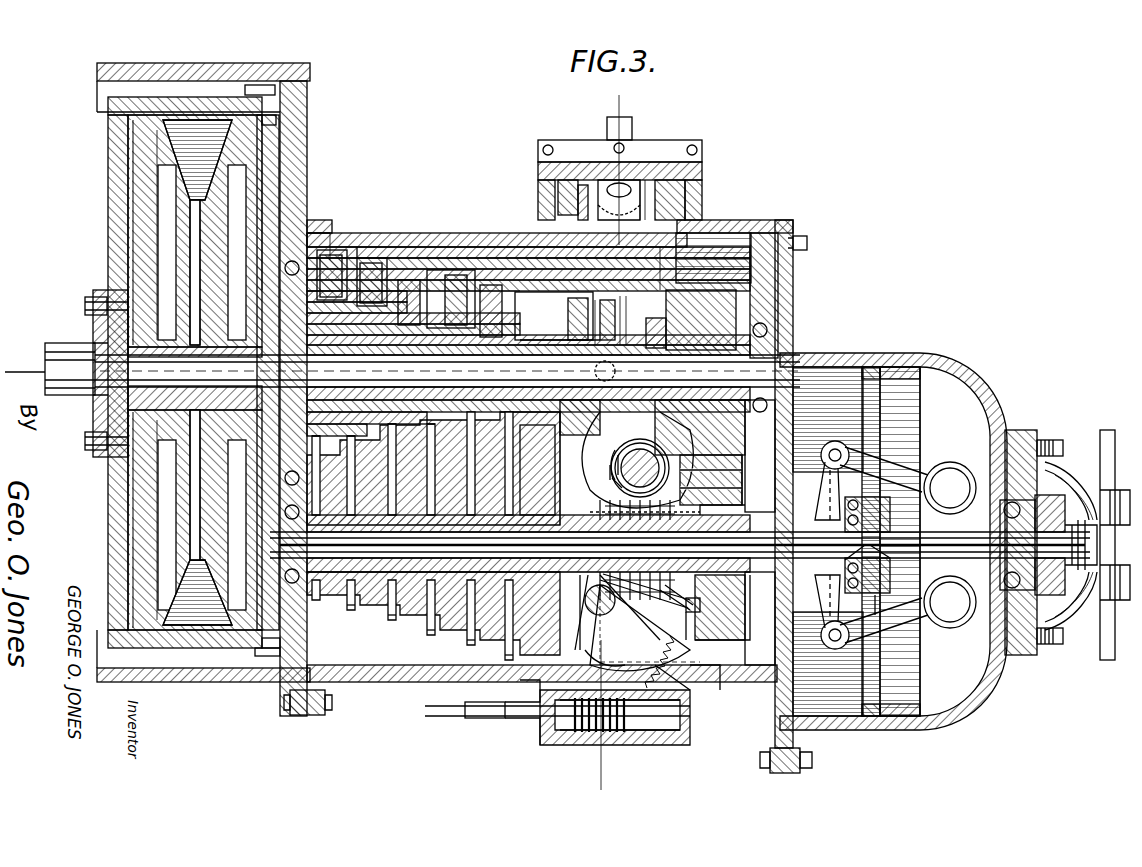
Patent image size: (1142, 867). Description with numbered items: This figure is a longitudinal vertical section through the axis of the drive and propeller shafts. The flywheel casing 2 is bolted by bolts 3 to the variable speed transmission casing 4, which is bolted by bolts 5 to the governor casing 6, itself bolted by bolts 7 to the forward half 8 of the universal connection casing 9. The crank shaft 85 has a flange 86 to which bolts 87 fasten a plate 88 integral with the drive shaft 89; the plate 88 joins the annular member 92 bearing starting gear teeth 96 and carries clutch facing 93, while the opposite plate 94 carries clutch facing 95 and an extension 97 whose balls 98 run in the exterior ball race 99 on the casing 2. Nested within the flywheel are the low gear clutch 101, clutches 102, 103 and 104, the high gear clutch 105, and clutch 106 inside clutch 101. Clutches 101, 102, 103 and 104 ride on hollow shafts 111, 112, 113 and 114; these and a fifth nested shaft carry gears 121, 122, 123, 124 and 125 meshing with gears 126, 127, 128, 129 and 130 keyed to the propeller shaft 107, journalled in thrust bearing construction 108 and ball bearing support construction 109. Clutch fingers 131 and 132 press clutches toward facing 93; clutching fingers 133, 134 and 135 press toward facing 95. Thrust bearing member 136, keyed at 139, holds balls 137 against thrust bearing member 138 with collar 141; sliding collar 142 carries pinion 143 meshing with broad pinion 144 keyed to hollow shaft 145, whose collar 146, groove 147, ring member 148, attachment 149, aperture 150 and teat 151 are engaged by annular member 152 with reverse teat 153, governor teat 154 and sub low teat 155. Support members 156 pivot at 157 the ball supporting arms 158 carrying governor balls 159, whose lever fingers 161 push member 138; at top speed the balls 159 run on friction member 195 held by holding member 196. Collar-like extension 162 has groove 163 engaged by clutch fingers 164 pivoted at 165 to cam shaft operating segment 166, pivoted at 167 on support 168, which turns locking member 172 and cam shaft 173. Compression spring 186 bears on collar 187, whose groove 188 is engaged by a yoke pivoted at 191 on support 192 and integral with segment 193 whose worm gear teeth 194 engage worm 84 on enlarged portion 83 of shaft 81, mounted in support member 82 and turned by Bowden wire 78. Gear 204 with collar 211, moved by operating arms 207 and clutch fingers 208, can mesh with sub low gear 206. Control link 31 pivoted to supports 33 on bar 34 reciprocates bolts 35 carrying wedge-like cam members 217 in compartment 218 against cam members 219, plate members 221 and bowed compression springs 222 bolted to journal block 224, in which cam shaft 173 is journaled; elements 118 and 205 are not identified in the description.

The flywheel casing 2 is at (176, 63).
The bolts 3 is at (340, 210).
The variable speed transmission casing 4 is at (240, 40).
The bolts 5 is at (304, 25).
The governor casing 6 is at (611, 107).
The bolts 7 is at (1045, 450).
The forward half of universal connection casing 8 is at (1080, 628).
The universal connection casing 9 is at (26, 367).
The control link 31 is at (612, 145).
The upstanding supports 33 is at (632, 120).
The bar 34 is at (572, 140).
The bolts 35 is at (652, 460).
The Bowden wire 78 is at (436, 712).
The shaft 81 is at (485, 717).
The support member 82 is at (670, 745).
The enlarged portion 83 is at (655, 735).
The worm 84 is at (628, 735).
The crank shaft 85 is at (58, 343).
The flange 86 is at (93, 400).
The bolts 87 is at (85, 300).
The plate 88 is at (108, 486).
The drive shaft 89 is at (447, 370).
The circumferential annular member 92 is at (190, 682).
The clutch facing 93 is at (108, 151).
The plate 94 is at (307, 134).
The clutch facing 95 is at (307, 160).
The starting gear teeth 96 is at (255, 656).
The extension 97 is at (355, 250).
The balls 98 is at (335, 240).
The exterior ball race 99 is at (345, 235).
The low gear clutch 101 is at (133, 181).
The clutch 102 is at (140, 135).
The clutch 103 is at (240, 125).
The clutch 104 is at (307, 172).
The high gear clutch 105 is at (225, 540).
The clutch 106 is at (133, 500).
The propeller shaft 107 is at (755, 525).
The thrust bearing construction 108 is at (1055, 480).
The ball bearing support construction 109 is at (300, 600).
The hollow shaft 111 is at (557, 330).
The hollow shaft 112 is at (421, 302).
The hollow shaft 113 is at (407, 445).
The hollow shaft 114 is at (337, 454).
The ring 118 is at (352, 275).
The gear 121 is at (511, 311).
The gear 122 is at (451, 299).
The gear 123 is at (445, 300).
The gear 124 is at (420, 250).
The gear 125 is at (395, 245).
The gear 126 is at (475, 646).
The gear 127 is at (445, 644).
The gear 128 is at (405, 630).
The gear 129 is at (382, 626).
The gear 130 is at (354, 621).
The clutch finger 131 is at (665, 276).
The clutch finger 132 is at (713, 258).
The clutching finger 133 is at (512, 260).
The clutching finger 134 is at (482, 250).
The clutching finger 135 is at (450, 240).
The thrust bearing member 136 is at (868, 585).
The balls 137 is at (882, 615).
The thrust bearing member 138 is at (845, 572).
The key 139 is at (895, 545).
The collar 141 is at (866, 542).
The collar 142 is at (766, 590).
The pinion 143 is at (735, 632).
The broad pinion 144 is at (735, 445).
The hollow shaft 145 is at (790, 310).
The collar 146 is at (672, 318).
The annular groove 147 is at (690, 458).
The ring member 148 is at (651, 322).
The attachment 149 is at (688, 476).
The annular aperture 150 is at (688, 492).
The teat 151 is at (612, 472).
The annular member 152 is at (645, 504).
The reverse teat 153 is at (614, 483).
The governor teat 154 is at (616, 462).
The sub low teat 155 is at (618, 455).
The support members 156 is at (812, 487).
The pivot 157 is at (822, 452).
The ball supporting arms 158 is at (908, 480).
The governor balls 159 is at (958, 468).
The lever fingers 161 is at (826, 500).
The collar-like extension 162 is at (742, 480).
The annular groove 163 is at (744, 495).
The clutch fingers 164 is at (700, 619).
The pivot 165 is at (700, 630).
The cam shaft operating segment 166 is at (676, 603).
The pivot 167 is at (633, 607).
The support 168 is at (690, 653).
The annular locking member 172 is at (542, 470).
The cam shaft 173 is at (612, 300).
The compression spring 186 is at (618, 580).
The collar 187 is at (580, 580).
The groove 188 is at (588, 605).
The pivot 191 is at (610, 615).
The support 192 is at (590, 660).
The segment 193 is at (668, 650).
The worm gear teeth 194 is at (680, 690).
The annular friction member 195 is at (905, 367).
The annular holding member 196 is at (872, 367).
The gear 204 is at (568, 312).
The block 205 is at (555, 345).
The sub low gear 206 is at (536, 430).
The operating arms 207 is at (643, 440).
The clutch fingers 208 is at (622, 367).
The collar 211 is at (574, 317).
The wedge-like cam members 217 is at (690, 180).
The compartment 218 is at (538, 185).
The cam members 219 is at (566, 180).
The plate members 221 is at (662, 180).
The bowed compression springs 222 is at (538, 170).
The journal block 224 is at (619, 200).